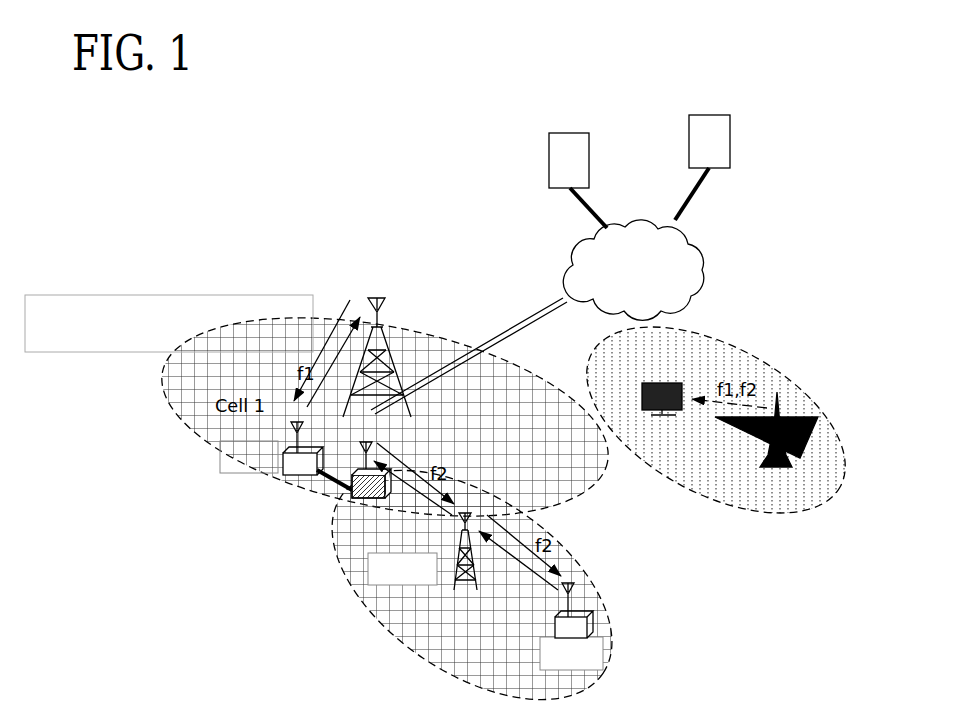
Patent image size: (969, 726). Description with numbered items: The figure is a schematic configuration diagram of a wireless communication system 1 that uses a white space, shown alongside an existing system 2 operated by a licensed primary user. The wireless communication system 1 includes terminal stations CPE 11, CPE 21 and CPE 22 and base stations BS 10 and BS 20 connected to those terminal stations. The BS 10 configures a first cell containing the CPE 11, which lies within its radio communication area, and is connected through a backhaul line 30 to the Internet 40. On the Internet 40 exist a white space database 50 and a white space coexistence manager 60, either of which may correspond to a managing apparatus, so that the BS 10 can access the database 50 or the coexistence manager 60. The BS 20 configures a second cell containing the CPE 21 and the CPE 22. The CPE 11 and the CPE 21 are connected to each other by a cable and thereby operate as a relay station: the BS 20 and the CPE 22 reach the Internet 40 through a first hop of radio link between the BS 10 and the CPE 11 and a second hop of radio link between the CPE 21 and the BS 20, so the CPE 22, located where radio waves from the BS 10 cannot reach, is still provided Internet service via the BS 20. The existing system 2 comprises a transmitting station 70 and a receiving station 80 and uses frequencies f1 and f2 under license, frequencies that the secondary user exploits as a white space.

The wireless communication system 1 is at (205, 303).
The existing system 2 is at (705, 454).
The BS 10 is at (388, 298).
The CPE 11 is at (283, 478).
The BS 20 is at (452, 598).
The CPE 21 is at (355, 497).
The CPE 22 is at (552, 638).
The backhaul line 30 is at (473, 340).
The Internet 40 is at (699, 256).
The white space database 50 is at (549, 160).
The white space coexistence manager 60 is at (730, 143).
The transmitting station 70 is at (777, 395).
The receiving station 80 is at (662, 383).